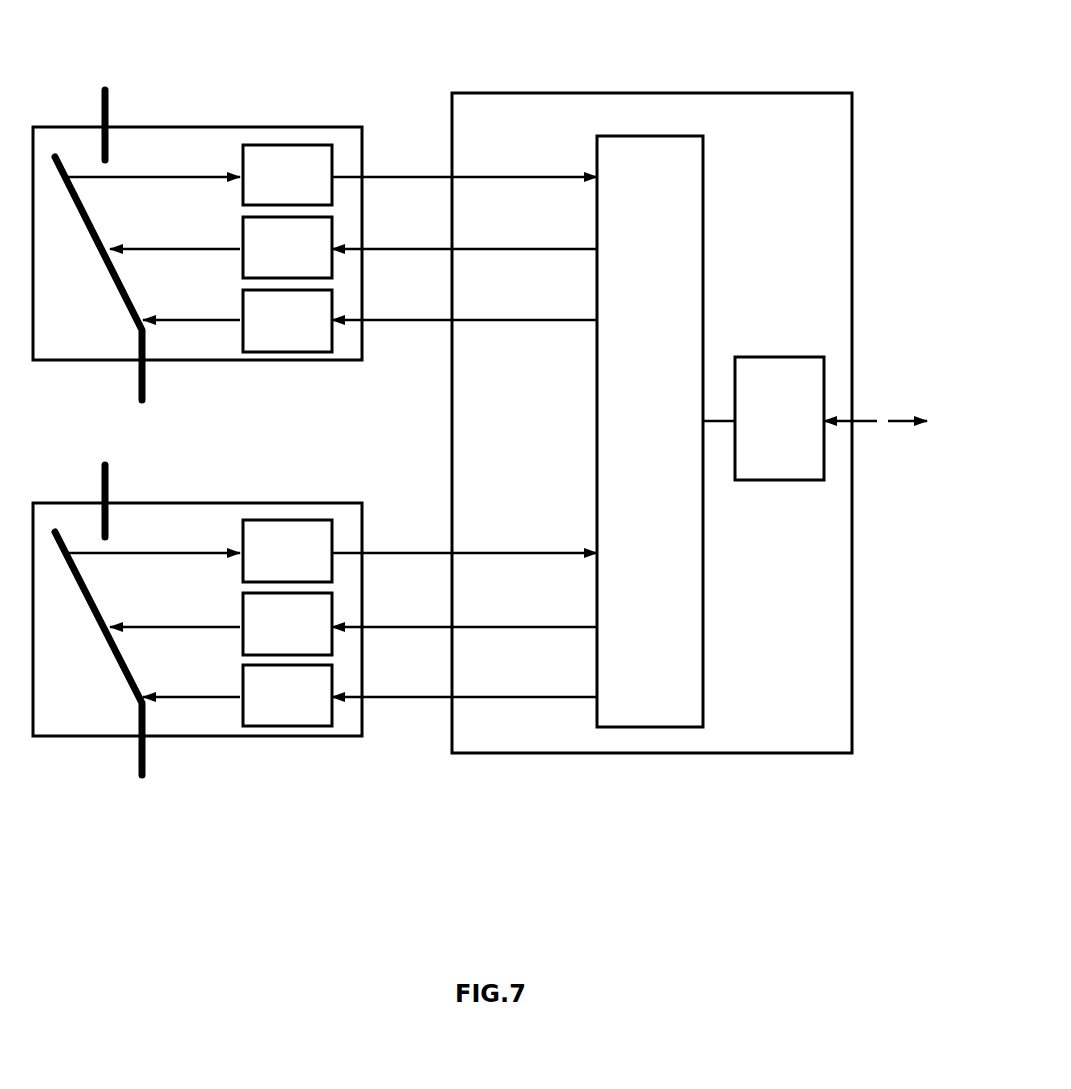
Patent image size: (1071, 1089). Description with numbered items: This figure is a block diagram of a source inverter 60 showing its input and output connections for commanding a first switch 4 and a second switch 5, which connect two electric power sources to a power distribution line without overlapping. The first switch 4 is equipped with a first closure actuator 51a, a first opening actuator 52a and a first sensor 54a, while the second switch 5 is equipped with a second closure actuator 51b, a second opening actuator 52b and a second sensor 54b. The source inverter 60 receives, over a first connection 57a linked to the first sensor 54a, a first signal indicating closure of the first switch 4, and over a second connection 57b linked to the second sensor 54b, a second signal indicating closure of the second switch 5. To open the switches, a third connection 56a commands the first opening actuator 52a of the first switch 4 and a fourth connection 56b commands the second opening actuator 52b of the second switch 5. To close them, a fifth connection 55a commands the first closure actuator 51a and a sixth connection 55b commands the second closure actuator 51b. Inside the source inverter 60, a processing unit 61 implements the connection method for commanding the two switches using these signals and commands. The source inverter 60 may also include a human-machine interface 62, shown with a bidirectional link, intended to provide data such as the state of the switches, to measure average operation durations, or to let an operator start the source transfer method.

The first switch 4 is at (80, 153).
The second switch 5 is at (90, 688).
The first closure actuator 51a is at (267, 328).
The first opening actuator 52a is at (273, 253).
The first sensor 54a is at (313, 167).
The fifth connection 55a is at (473, 315).
The third connection 56a is at (505, 247).
The first connection 57a is at (560, 170).
The second closure actuator 51b is at (262, 700).
The second opening actuator 52b is at (282, 633).
The second sensor 54b is at (308, 552).
The sixth connection 55b is at (415, 698).
The fourth connection 56b is at (510, 628).
The second connection 57b is at (554, 555).
The source inverter 60 is at (792, 115).
The processing unit 61 is at (680, 200).
The human-machine interface 62 is at (796, 387).